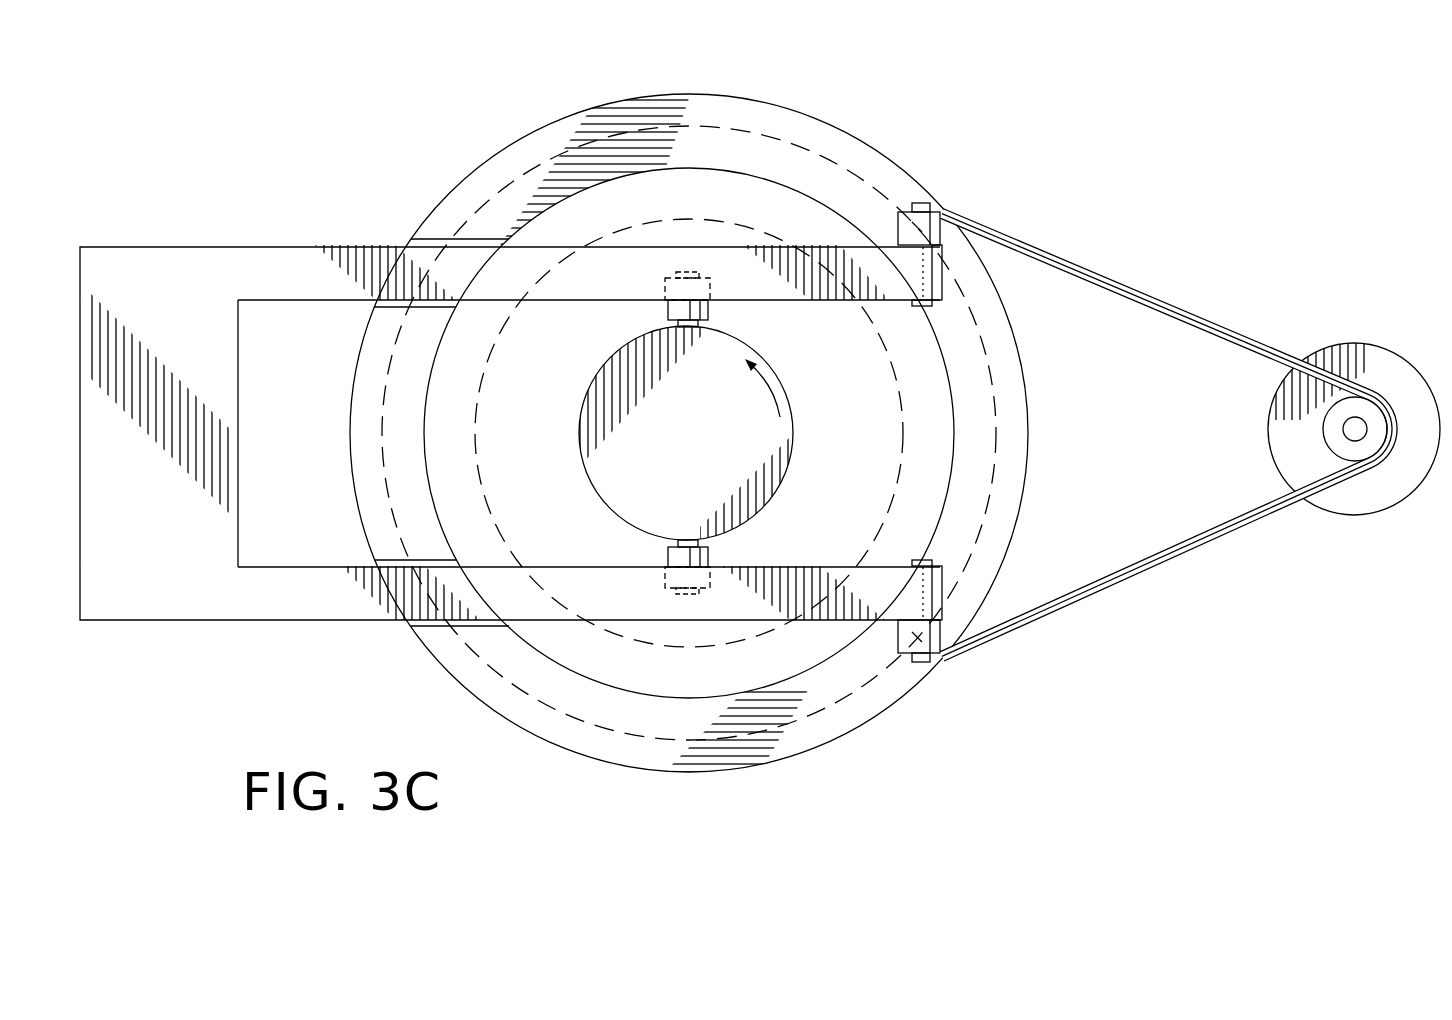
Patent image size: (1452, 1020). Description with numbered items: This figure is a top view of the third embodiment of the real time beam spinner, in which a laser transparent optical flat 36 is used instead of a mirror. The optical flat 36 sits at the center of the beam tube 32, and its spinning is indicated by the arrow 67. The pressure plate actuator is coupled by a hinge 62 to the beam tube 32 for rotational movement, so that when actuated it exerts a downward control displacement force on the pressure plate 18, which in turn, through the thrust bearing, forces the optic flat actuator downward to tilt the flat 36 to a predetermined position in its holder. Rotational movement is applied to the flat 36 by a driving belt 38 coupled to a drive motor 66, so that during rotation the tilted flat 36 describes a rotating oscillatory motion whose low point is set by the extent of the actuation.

The pressure plate 18 is at (823, 442).
The beam tube 32 is at (1008, 378).
The laser transparent optical flat 36 is at (720, 421).
The driving belt 38 is at (1148, 300).
The hinge 62 is at (920, 205).
The drive motor 66 is at (1372, 497).
The arrow 67 is at (773, 398).